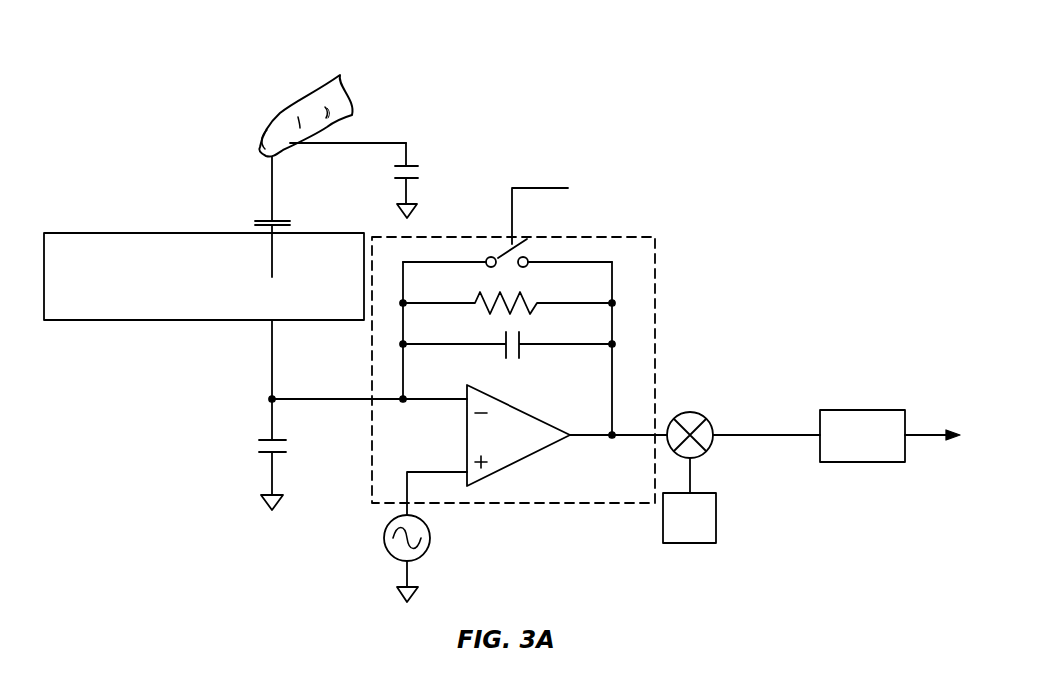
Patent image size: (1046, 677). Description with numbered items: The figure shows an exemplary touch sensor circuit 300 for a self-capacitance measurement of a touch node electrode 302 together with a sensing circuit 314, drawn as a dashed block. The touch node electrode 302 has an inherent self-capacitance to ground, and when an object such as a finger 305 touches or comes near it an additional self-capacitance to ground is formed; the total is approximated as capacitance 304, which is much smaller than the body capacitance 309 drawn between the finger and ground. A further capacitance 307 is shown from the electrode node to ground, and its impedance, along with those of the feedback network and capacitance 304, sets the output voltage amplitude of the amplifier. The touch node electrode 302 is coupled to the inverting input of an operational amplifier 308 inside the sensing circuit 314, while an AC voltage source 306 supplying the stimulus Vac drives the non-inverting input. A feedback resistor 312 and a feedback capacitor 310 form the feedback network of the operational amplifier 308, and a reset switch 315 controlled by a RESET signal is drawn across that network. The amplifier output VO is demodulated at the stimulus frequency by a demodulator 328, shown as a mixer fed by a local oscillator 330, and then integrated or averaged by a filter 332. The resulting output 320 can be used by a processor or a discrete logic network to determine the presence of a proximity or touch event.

The touch sensor circuit 300 is at (216, 77).
The touch node electrode 302 is at (272, 262).
The capacitance 304 is at (284, 218).
The finger 305 is at (302, 97).
The AC voltage source 306 is at (430, 538).
The capacitance 307 is at (258, 444).
The operational amplifier 308 is at (517, 463).
The body capacitance 309 is at (418, 172).
The feedback capacitor 310 is at (520, 343).
The feedback resistor 312 is at (533, 293).
The sensing circuit 314 is at (607, 237).
The reset switch 315 is at (501, 256).
The output 320 is at (923, 433).
The demodulator 328 is at (690, 412).
The local oscillator 330 is at (692, 545).
The filter 332 is at (862, 410).